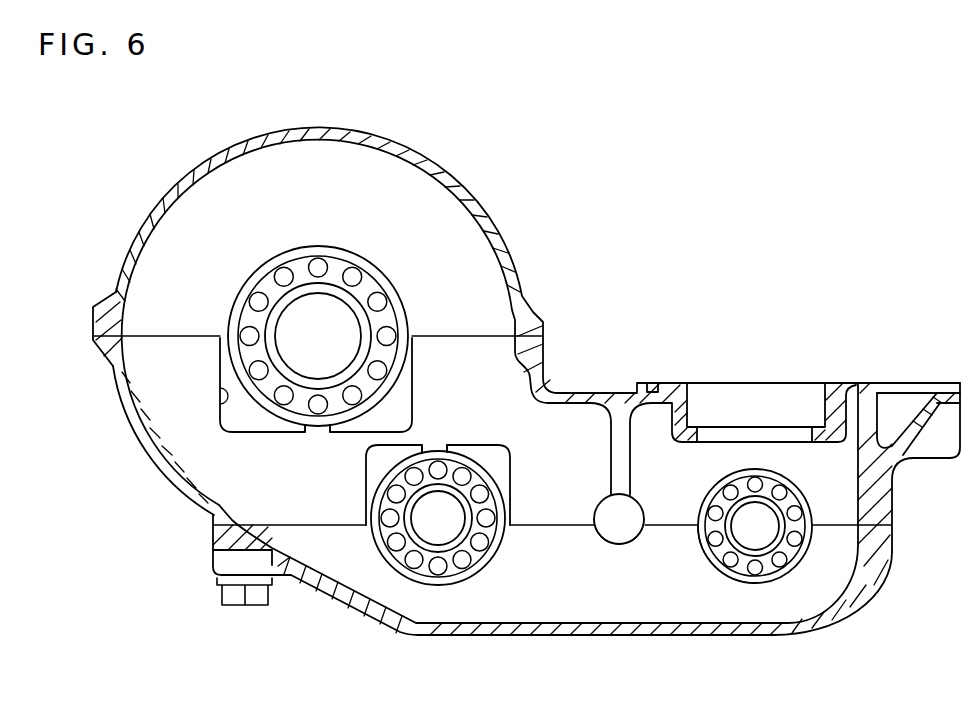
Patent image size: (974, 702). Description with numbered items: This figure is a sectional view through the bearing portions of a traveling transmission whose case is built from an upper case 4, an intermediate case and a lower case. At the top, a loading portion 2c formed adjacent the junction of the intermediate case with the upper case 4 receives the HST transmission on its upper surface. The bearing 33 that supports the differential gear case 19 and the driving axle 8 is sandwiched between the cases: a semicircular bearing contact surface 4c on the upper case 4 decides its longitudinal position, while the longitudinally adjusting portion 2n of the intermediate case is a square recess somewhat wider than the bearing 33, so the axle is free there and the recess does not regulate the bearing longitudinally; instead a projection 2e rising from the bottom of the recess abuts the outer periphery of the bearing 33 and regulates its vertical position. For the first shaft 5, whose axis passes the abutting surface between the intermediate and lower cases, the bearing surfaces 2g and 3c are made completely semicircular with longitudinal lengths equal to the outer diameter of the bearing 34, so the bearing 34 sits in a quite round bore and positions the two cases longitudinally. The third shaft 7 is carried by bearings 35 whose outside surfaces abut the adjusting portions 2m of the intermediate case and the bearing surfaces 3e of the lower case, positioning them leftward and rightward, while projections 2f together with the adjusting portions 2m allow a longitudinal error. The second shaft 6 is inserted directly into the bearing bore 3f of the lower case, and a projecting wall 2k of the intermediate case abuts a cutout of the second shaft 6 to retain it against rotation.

The upper case 4 is at (488, 216).
The bearing contact surface 4c is at (346, 251).
The bearing 33 is at (276, 282).
The differential gear case 19 is at (382, 312).
The driving axle 8 is at (327, 345).
The longitudinally adjusting portion 2n is at (222, 394).
The projection 2e is at (318, 429).
The adjusting portion 2m is at (510, 481).
The projection 2f is at (433, 448).
The bearing 35 is at (383, 527).
The third shaft 7 is at (450, 534).
The bearing surface 3e is at (437, 586).
The projecting wall 2k is at (630, 473).
The second shaft 6 is at (634, 531).
The bearing bore 3f is at (622, 546).
The loading portion 2c is at (836, 383).
The bearing surface 2g is at (782, 490).
The bearing 34 is at (788, 566).
The first shaft 5 is at (767, 538).
The bearing surface 3c is at (718, 566).